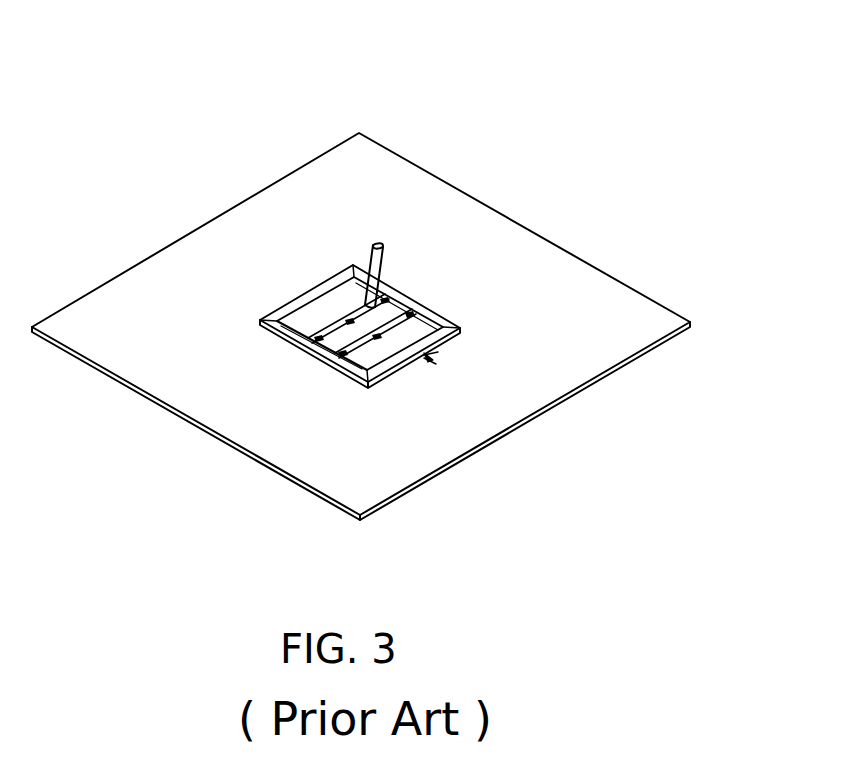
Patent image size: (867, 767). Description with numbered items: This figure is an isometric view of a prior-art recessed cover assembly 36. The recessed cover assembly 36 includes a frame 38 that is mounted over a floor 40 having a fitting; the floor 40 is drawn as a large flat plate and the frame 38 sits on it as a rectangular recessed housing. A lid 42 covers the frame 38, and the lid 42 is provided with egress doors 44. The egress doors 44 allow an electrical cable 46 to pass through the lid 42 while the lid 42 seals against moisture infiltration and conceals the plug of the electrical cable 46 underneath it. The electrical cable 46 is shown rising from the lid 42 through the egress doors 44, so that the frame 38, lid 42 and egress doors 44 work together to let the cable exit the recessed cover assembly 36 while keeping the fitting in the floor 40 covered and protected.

The recessed cover assembly 36 is at (433, 360).
The frame 38 is at (320, 283).
The floor 40 is at (308, 190).
The lid 42 is at (402, 318).
The egress doors 44 is at (417, 332).
The electrical cable 46 is at (394, 250).